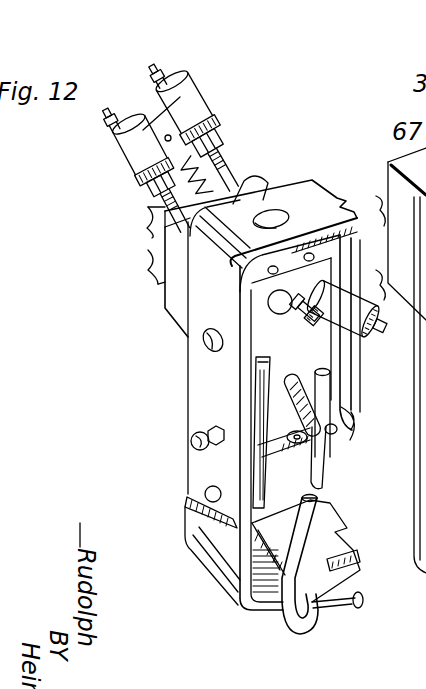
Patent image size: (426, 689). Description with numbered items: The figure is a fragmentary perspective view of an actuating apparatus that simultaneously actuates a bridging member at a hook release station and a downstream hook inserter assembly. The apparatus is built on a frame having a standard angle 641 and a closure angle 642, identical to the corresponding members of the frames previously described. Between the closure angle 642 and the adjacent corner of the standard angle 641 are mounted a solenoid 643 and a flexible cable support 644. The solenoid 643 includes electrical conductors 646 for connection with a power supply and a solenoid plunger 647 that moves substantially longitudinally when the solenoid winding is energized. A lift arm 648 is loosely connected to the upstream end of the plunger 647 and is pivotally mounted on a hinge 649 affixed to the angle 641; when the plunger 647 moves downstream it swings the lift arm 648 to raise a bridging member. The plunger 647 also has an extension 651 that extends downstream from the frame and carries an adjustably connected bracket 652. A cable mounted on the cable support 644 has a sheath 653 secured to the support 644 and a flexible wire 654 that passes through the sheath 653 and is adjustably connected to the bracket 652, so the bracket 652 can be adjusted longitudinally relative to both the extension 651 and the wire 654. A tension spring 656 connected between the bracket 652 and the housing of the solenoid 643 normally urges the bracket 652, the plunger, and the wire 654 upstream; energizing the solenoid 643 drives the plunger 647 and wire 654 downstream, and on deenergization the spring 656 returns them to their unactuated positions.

The standard angle 641 is at (287, 197).
The closure angle 642 is at (353, 326).
The solenoid 643 is at (170, 318).
The flexible cable support 644 is at (260, 337).
The electrical conductors 646 is at (155, 256).
The solenoid plunger 647 is at (356, 406).
The lift arm 648 is at (333, 468).
The hinge 649 is at (340, 621).
The extension 651 is at (160, 197).
The bracket 652 is at (124, 152).
The sheath 653 is at (337, 328).
The flexible wire 654 is at (236, 166).
The tension spring 656 is at (222, 142).